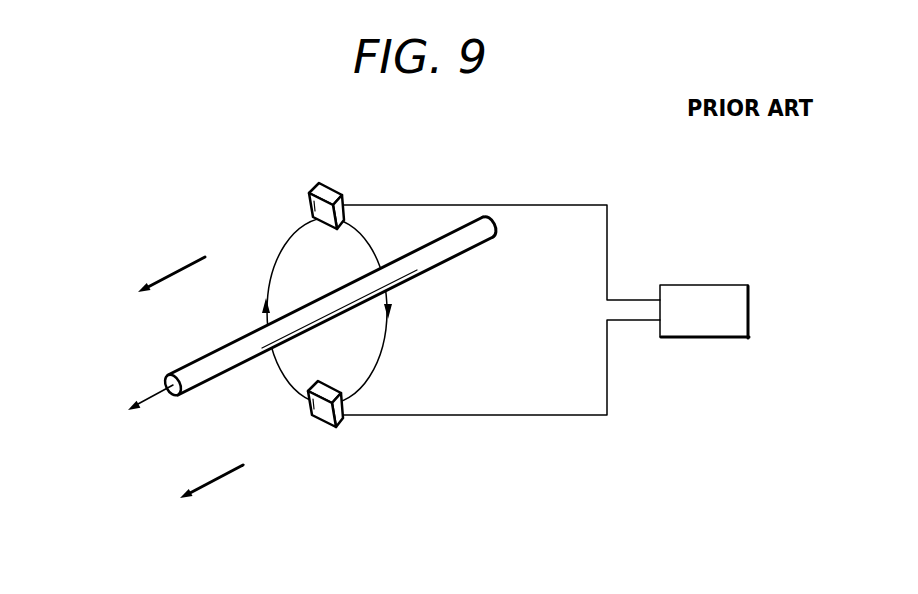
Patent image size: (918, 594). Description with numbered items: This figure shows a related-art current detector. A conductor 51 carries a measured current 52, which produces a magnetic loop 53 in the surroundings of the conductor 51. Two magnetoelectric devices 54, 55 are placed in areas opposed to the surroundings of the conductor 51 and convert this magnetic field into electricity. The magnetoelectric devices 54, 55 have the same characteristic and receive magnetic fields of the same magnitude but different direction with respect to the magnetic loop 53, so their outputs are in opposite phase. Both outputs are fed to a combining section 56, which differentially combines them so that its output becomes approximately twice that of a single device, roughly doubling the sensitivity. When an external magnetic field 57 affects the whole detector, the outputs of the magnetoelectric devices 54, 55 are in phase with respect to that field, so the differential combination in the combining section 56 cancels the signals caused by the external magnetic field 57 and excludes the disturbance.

The conductor 51 is at (458, 258).
The measured current 52 is at (132, 409).
The magnetic loop 53 is at (388, 333).
The magnetoelectric device 54 is at (328, 183).
The magnetoelectric device 55 is at (322, 427).
The combining section 56 is at (723, 285).
The external magnetic field 57 is at (192, 262).